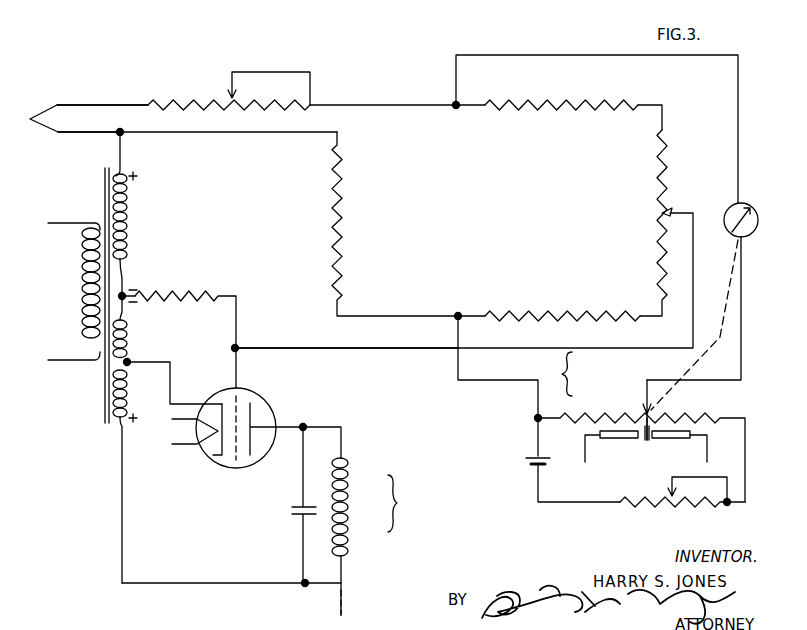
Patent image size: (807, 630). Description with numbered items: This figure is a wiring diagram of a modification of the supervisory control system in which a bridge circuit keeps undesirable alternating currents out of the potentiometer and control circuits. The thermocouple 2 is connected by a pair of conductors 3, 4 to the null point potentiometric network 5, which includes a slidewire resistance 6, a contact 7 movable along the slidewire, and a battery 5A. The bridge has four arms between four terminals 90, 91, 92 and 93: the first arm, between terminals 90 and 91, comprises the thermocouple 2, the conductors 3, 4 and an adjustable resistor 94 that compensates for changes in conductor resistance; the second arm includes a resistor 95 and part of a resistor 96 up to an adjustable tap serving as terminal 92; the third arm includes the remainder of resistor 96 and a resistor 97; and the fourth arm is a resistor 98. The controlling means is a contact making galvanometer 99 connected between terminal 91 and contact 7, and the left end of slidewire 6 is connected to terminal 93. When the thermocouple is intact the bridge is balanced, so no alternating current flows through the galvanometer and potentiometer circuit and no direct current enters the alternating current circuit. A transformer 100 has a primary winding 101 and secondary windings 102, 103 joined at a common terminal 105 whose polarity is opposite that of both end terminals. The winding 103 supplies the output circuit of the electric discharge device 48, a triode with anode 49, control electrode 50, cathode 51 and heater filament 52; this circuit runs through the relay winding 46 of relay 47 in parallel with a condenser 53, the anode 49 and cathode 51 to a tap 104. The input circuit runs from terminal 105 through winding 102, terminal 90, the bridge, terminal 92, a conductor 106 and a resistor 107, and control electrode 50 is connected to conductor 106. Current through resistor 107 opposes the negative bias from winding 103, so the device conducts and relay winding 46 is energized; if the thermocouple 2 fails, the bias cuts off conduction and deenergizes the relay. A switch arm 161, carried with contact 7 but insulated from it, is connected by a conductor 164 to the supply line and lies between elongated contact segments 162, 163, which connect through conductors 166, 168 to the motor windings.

The thermocouple 2 is at (40, 126).
The conductor 3 is at (85, 106).
The conductor 4 is at (76, 134).
The null point potentiometric network 5 is at (560, 374).
The battery 5A is at (528, 458).
The slidewire resistance 6 is at (606, 413).
The contact 7 is at (644, 412).
The relay winding 46 is at (346, 465).
The relay 47 is at (403, 503).
The electric discharge device 48 is at (272, 429).
The anode 49 is at (255, 452).
The control electrode 50 is at (236, 460).
The cathode 51 is at (218, 456).
The heater filament 52 is at (205, 447).
The condenser 53 is at (292, 508).
The bridge terminal 90 is at (123, 136).
The bridge terminal 91 is at (454, 102).
The bridge terminal 92 is at (669, 212).
The bridge terminal 93 is at (457, 312).
The resistor 94 is at (196, 102).
The resistor 95 is at (526, 102).
The resistor 96 is at (655, 168).
The resistor 97 is at (520, 310).
The resistor 98 is at (333, 185).
The contact making galvanometer 99 is at (757, 213).
The transformer 100 is at (106, 430).
The primary winding 101 is at (85, 280).
The secondary winding 102 is at (128, 222).
The secondary winding 103 is at (128, 410).
The tap 104 is at (129, 356).
The common terminal 105 is at (124, 294).
The conductor 106 is at (282, 344).
The resistor 107 is at (193, 290).
The switch arm 161 is at (651, 440).
The contact segment 162 is at (684, 440).
The contact segment 163 is at (612, 440).
The conductor 164 is at (644, 450).
The conductor 166 is at (709, 462).
The conductor 168 is at (584, 455).